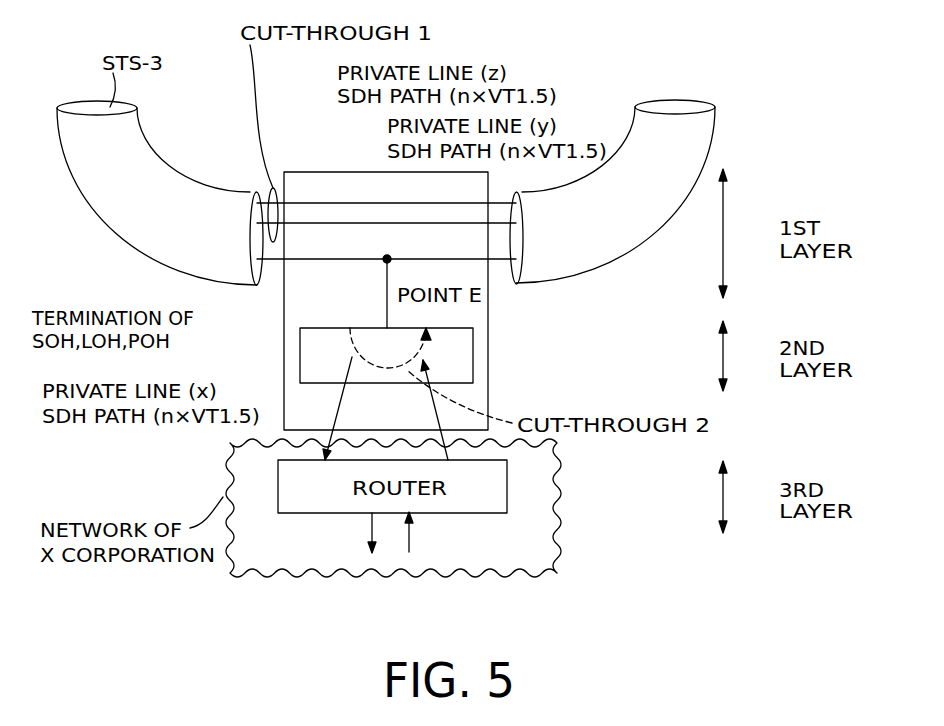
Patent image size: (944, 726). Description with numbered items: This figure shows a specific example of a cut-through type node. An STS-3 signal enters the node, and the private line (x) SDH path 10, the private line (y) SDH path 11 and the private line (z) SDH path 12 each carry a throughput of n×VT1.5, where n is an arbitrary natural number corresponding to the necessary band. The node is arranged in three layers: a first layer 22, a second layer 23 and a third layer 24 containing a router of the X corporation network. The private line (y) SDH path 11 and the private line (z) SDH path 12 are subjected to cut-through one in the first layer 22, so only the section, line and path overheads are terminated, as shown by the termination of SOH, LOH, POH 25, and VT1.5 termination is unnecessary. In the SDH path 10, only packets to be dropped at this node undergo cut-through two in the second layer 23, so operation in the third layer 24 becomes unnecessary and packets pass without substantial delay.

The private line (x) SDH path 10 is at (300, 340).
The private line (y) SDH path 11 is at (360, 222).
The private line (z) SDH path 12 is at (308, 203).
The first layer 22 is at (743, 233).
The second layer 23 is at (743, 356).
The third layer 24 is at (743, 497).
The termination of SOH, LOH, POH 25 is at (237, 276).